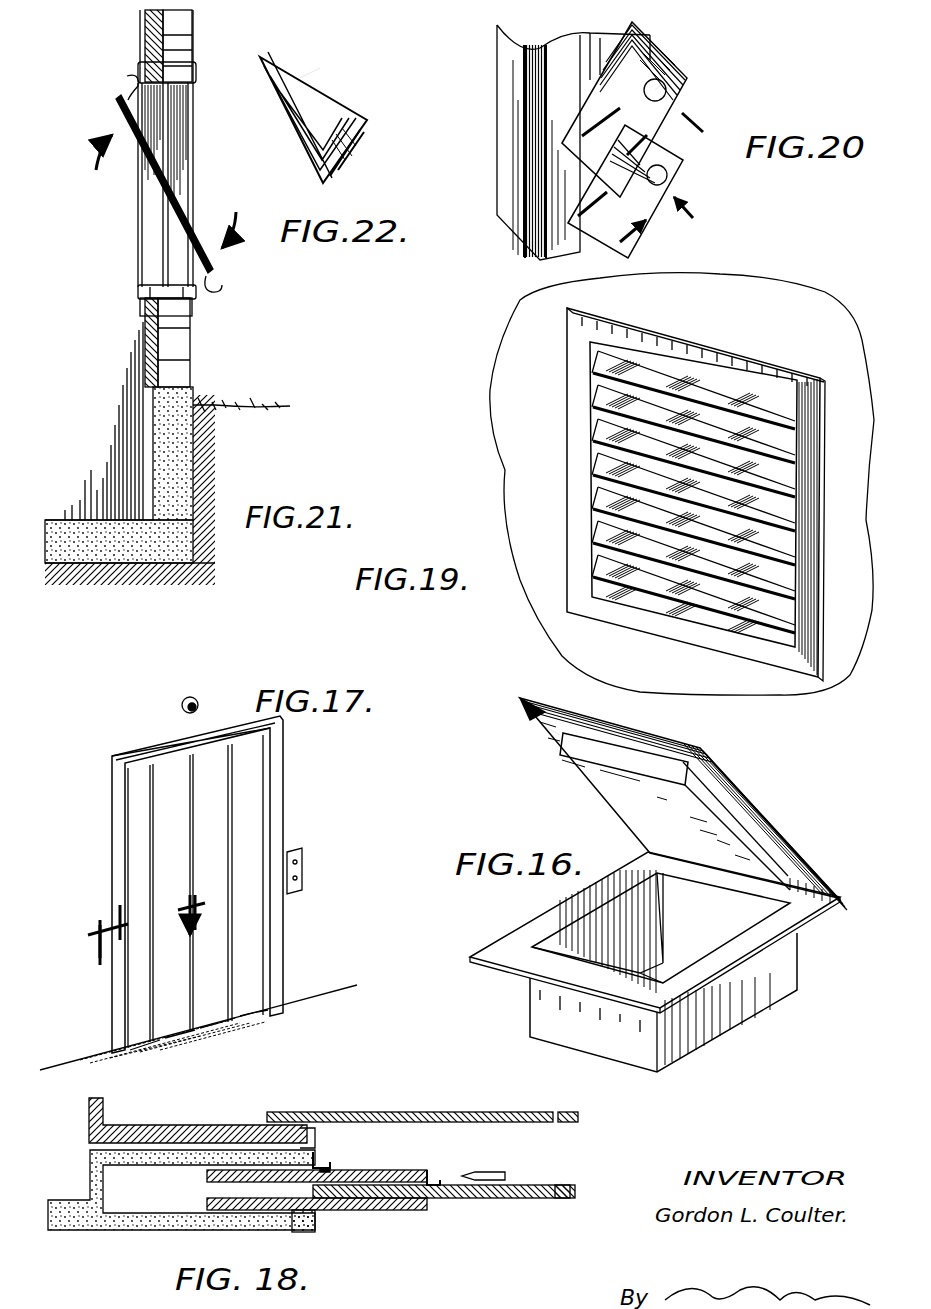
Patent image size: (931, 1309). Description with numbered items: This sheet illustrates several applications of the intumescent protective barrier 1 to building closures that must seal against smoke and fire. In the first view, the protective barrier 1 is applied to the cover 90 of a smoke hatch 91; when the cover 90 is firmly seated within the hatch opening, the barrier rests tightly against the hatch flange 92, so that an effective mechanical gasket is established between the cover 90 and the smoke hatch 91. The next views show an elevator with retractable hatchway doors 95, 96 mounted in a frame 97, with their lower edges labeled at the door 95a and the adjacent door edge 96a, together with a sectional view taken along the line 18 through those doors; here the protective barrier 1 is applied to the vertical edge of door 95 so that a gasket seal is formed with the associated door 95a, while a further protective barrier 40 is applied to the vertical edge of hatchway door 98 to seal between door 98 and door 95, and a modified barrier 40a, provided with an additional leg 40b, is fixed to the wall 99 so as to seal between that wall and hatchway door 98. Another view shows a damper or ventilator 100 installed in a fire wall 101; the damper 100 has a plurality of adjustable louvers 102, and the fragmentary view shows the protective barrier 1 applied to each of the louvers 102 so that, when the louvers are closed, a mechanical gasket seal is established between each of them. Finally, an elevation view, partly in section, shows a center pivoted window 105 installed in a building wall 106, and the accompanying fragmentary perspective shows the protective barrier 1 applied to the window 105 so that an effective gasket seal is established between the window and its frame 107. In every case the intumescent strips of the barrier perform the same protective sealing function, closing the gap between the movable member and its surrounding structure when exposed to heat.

In FIG. 21, the protective barrier 1 is at (172, 182).
In FIG. 22, the protective barrier 1 is at (303, 77).
In FIG. 20, the protective barrier 1 is at (675, 105).
In FIG. 16, the protective barrier 1 is at (545, 727).
In FIG. 18, the protective barrier 1 is at (555, 1190).
In FIG. 17, the section line 18 is at (142, 919).
In FIG. 18, the protective barrier 40 is at (430, 1175).
In FIG. 18, the modified barrier 40a is at (320, 1168).
In FIG. 18, the additional leg 40b is at (303, 1150).
In FIG. 16, the cover 90 is at (600, 785).
In FIG. 16, the smoke hatch 91 is at (800, 968).
In FIG. 16, the hatch flange 92 is at (530, 930).
In FIG. 17, the hatchway door 95 is at (180, 1035).
In FIG. 18, the hatchway door 95 is at (515, 1198).
In FIG. 17, the door 95a is at (212, 1025).
In FIG. 18, the door 95a is at (548, 1210).
In FIG. 17, the hatchway door 96 is at (150, 1045).
In FIG. 18, the hatchway door 96 is at (405, 1210).
In FIG. 17, the door panel edge 96a is at (247, 1012).
In FIG. 17, the frame 97 is at (278, 795).
In FIG. 18, the frame 97 is at (315, 1222).
In FIG. 18, the hatchway door 98 is at (375, 1170).
In FIG. 18, the wall 99 is at (185, 1140).
In FIG. 20, the damper 100 is at (515, 148).
In FIG. 19, the damper 100 is at (545, 465).
In FIG. 19, the fire wall 101 is at (535, 403).
In FIG. 20, the louvers 102 is at (617, 157).
In FIG. 19, the louvers 102 is at (785, 475).
In FIG. 21, the center pivoted window 105 is at (180, 192).
In FIG. 22, the center pivoted window 105 is at (290, 120).
In FIG. 21, the building wall 106 is at (192, 338).
In FIG. 21, the frame 107 is at (178, 108).